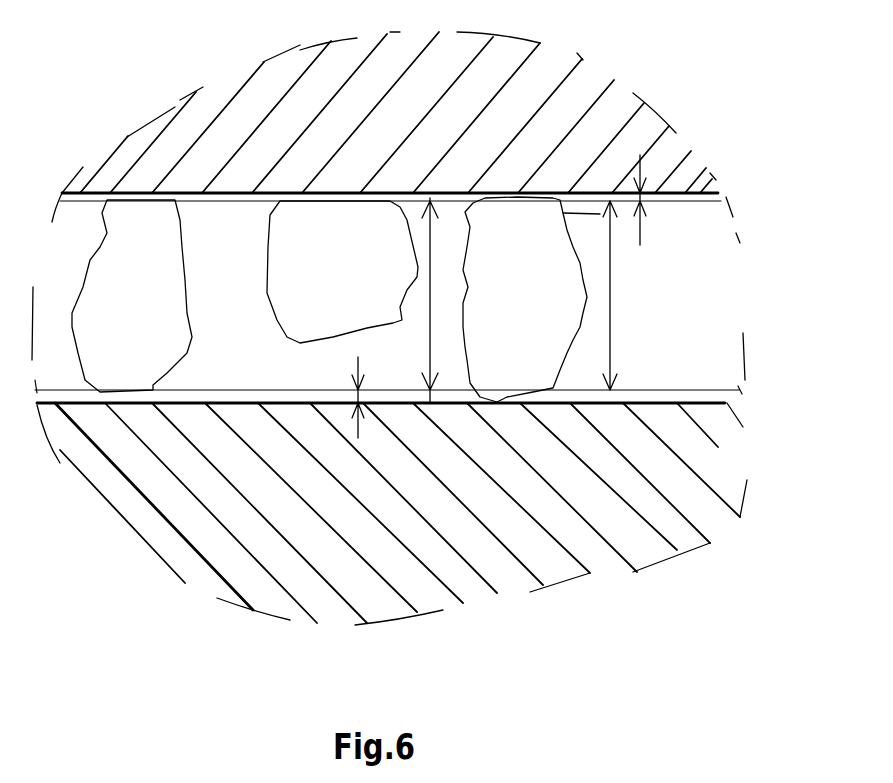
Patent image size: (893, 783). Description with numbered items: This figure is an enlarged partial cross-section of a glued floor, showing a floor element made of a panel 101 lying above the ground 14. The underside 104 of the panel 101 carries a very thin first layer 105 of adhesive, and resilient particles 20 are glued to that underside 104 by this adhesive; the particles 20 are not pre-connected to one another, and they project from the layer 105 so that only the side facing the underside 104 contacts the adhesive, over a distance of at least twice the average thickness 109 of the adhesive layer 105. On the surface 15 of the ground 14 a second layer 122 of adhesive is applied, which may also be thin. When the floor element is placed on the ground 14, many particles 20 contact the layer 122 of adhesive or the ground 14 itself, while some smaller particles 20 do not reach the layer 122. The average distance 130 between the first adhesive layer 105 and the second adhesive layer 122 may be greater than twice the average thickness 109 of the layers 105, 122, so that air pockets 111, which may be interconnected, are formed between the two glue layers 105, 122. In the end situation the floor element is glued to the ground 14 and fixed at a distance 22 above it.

The ground 14 is at (150, 570).
The surface of the ground 15 is at (122, 405).
The resilient particles 20 is at (145, 317).
The distance 22 is at (433, 337).
The panel 101 is at (195, 120).
The underside 104 is at (700, 199).
The layer of adhesive 105 is at (217, 198).
The average thickness of the layer of adhesive 109 is at (640, 200).
The air pockets 111 is at (240, 312).
The second layer of adhesive 122 is at (213, 397).
The average distance between adhesive layers 130 is at (611, 312).